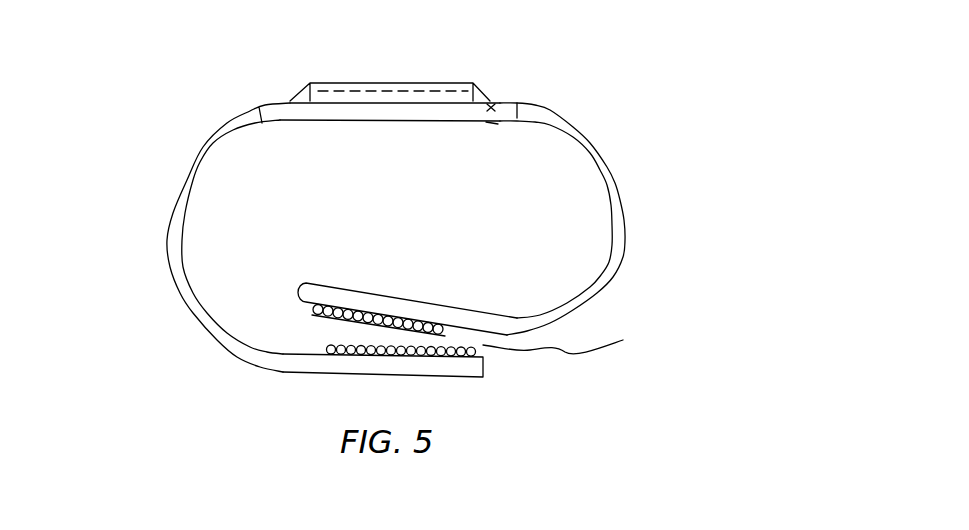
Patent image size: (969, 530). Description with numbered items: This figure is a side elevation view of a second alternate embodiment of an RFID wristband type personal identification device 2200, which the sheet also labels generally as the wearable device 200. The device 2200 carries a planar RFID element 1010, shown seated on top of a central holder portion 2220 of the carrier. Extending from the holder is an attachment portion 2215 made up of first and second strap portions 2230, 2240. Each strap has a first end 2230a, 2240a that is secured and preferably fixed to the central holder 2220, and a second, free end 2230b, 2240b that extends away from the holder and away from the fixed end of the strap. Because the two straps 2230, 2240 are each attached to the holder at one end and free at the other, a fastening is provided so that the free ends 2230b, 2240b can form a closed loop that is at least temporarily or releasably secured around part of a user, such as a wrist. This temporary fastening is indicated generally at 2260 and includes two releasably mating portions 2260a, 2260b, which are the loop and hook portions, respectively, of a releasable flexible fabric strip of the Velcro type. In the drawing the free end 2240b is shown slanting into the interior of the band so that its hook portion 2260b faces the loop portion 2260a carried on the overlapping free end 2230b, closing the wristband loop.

The wearable device 200 is at (142, 243).
The RFID wristband type personal identification device 2200 is at (772, 108).
The planar RFID element 1010 is at (404, 85).
The central holder portion 2220 is at (503, 97).
The first strap portion 2230 is at (226, 128).
The first end of first strap portion 2230a is at (247, 123).
The second, free end of first strap portion 2230b is at (468, 362).
The second strap portion 2240 is at (614, 183).
The first end of second strap portion 2240a is at (536, 117).
The second, free end of second strap portion 2240b is at (320, 283).
The attachment portion 2215 is at (635, 239).
The temporary fastening 2260 is at (270, 304).
The loop portion 2260a is at (623, 340).
The hook portion 2260b is at (305, 308).